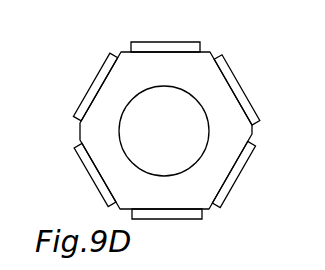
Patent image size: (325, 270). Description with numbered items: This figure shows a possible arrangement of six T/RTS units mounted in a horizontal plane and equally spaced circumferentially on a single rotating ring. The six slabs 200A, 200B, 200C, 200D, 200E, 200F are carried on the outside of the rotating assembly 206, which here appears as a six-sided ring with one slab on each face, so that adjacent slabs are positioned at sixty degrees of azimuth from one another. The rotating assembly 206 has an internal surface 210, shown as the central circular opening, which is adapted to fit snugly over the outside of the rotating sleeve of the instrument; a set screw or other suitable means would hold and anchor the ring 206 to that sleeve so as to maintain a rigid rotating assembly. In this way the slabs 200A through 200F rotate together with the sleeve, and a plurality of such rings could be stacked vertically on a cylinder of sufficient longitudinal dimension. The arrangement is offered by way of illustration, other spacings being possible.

The T/RTS slab 200A is at (160, 42).
The T/RTS slab 200B is at (238, 89).
The T/RTS slab 200C is at (228, 186).
The T/RTS slab 200D is at (182, 211).
The T/RTS slab 200E is at (93, 172).
The T/RTS slab 200F is at (95, 88).
The rotating assembly 206 is at (140, 85).
The internal surface 210 is at (132, 162).